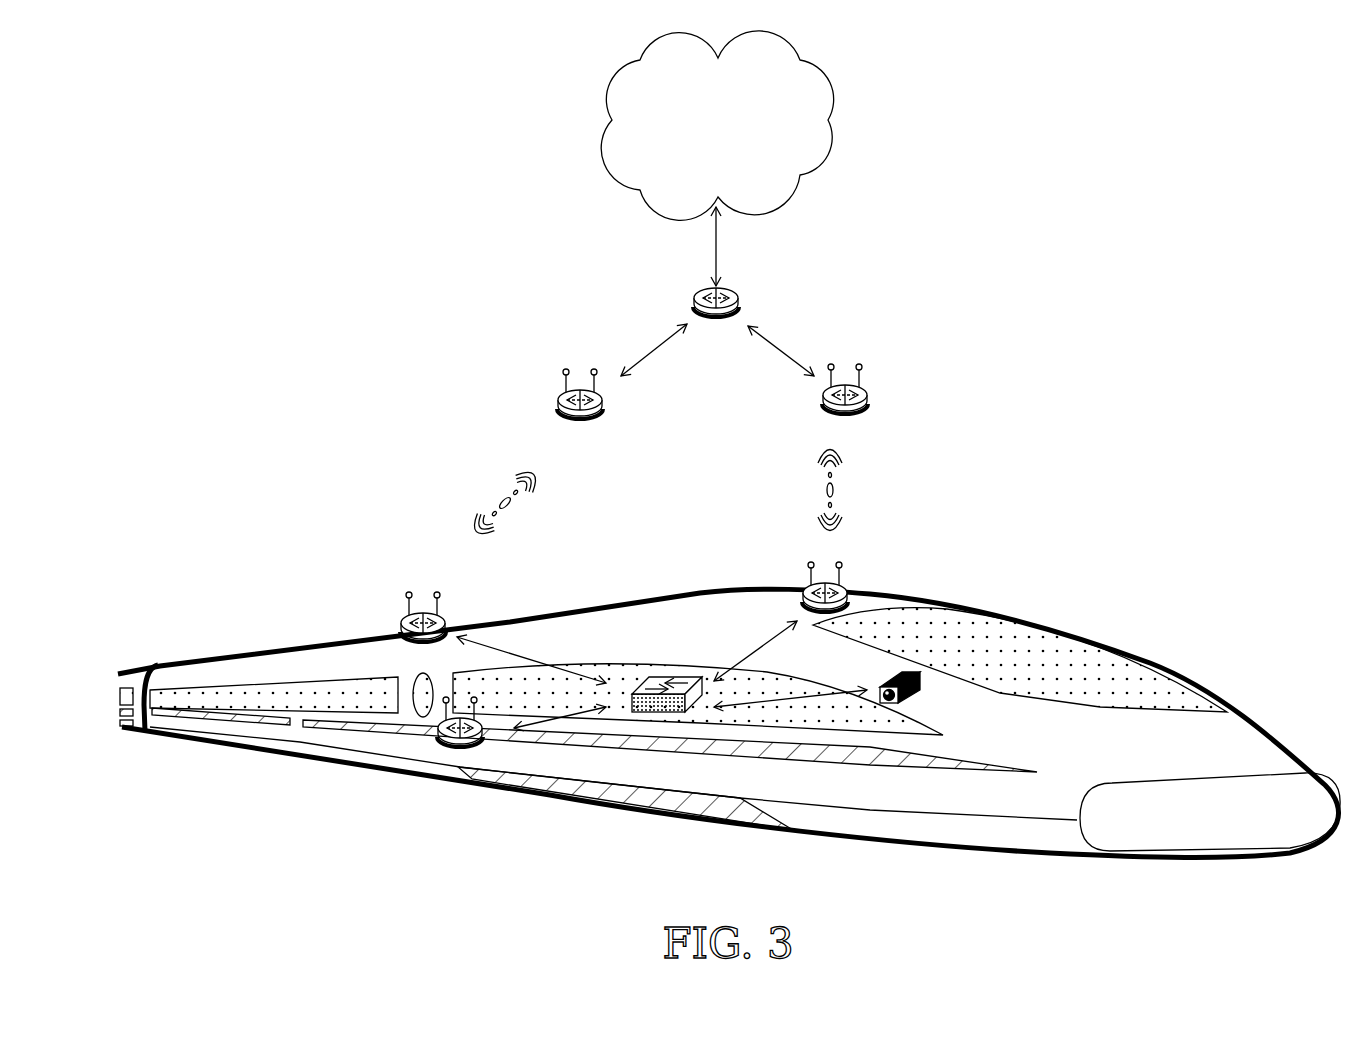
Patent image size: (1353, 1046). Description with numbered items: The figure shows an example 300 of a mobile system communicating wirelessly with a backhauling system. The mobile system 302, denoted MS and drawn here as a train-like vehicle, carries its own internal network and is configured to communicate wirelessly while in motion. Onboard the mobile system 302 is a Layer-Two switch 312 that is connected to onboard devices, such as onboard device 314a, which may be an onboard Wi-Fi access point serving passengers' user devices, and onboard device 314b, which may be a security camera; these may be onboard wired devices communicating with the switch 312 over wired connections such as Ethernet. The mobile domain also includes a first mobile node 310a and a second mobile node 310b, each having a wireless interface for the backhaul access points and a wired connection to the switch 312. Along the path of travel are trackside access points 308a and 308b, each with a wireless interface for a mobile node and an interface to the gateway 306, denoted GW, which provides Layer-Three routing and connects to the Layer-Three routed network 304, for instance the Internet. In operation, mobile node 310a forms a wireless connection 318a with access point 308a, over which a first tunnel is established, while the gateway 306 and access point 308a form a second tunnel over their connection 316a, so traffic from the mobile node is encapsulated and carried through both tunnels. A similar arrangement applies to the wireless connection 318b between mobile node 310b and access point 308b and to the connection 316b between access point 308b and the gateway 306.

The example of a mobile system communicating wirelessly 300 is at (1268, 122).
The mobile system 302 is at (272, 668).
The L3-routed network 304 is at (699, 163).
The gateway 306 is at (740, 294).
The trackside access point 308a is at (868, 390).
The trackside access point 308b is at (559, 393).
The first mobile node 310a is at (846, 591).
The second mobile node 310b is at (402, 620).
The Layer-2 switch 312 is at (672, 676).
The onboard device 314a is at (463, 748).
The onboard device 314b is at (920, 702).
The connection 316a is at (767, 308).
The connection 316b is at (667, 308).
The wireless connection 318a is at (868, 435).
The wireless connection 318b is at (510, 437).